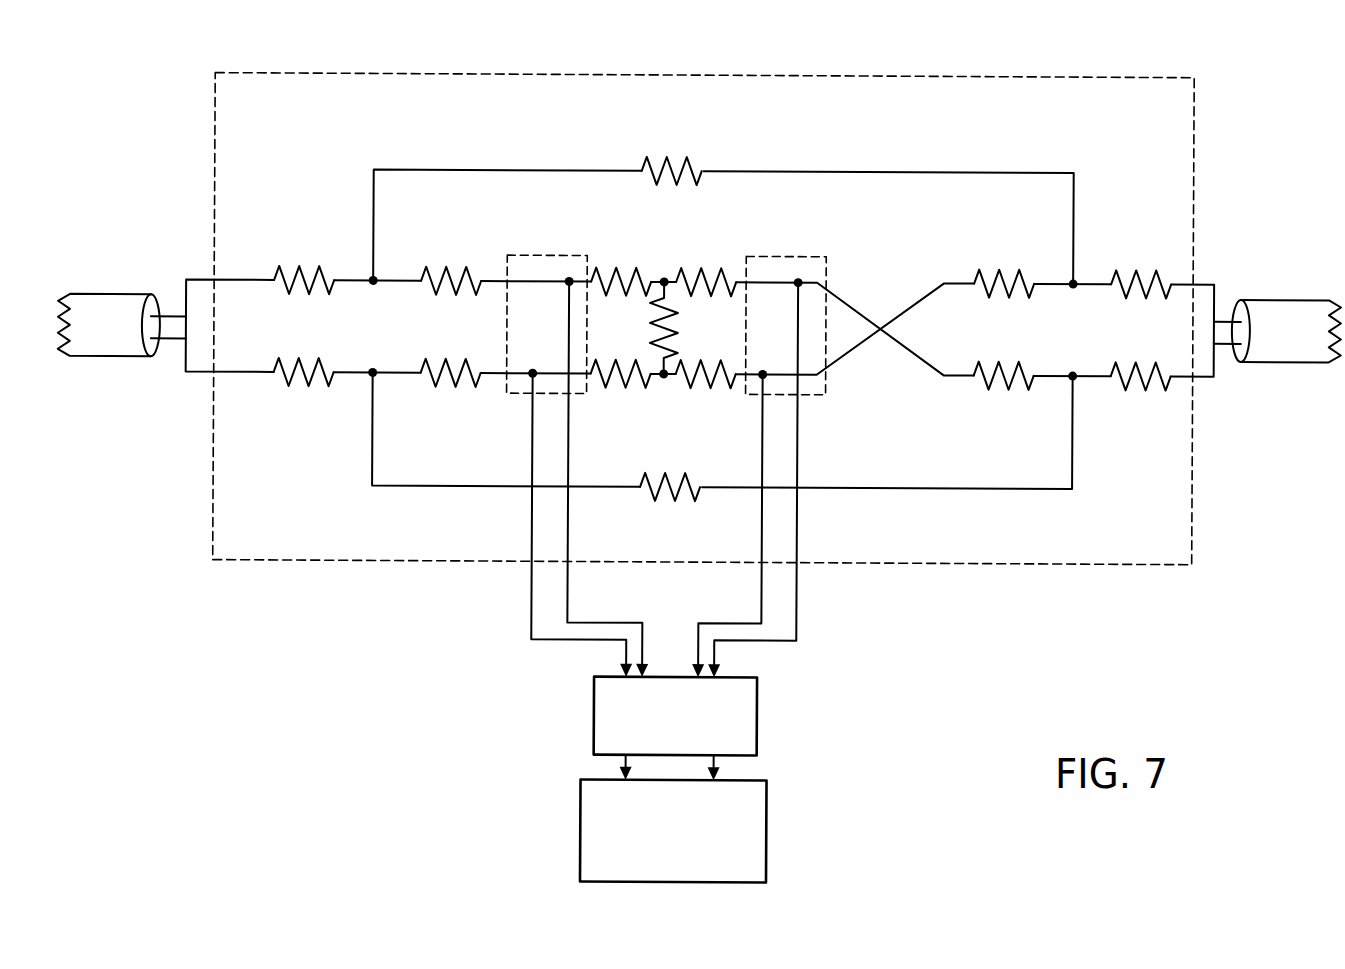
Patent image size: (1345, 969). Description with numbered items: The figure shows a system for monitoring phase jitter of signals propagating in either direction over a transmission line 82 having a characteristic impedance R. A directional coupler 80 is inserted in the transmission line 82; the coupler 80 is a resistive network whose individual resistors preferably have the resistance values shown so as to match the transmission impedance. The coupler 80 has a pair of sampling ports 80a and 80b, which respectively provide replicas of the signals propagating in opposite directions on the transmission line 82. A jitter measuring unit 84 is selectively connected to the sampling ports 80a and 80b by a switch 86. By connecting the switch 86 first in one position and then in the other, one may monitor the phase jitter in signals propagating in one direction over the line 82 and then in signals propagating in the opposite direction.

The directional coupler 80 is at (1122, 76).
The sampling port 80a is at (518, 396).
The sampling port 80b is at (812, 396).
The transmission line 82 is at (112, 296).
The jitter measuring unit 84 is at (770, 836).
The switch 86 is at (760, 719).